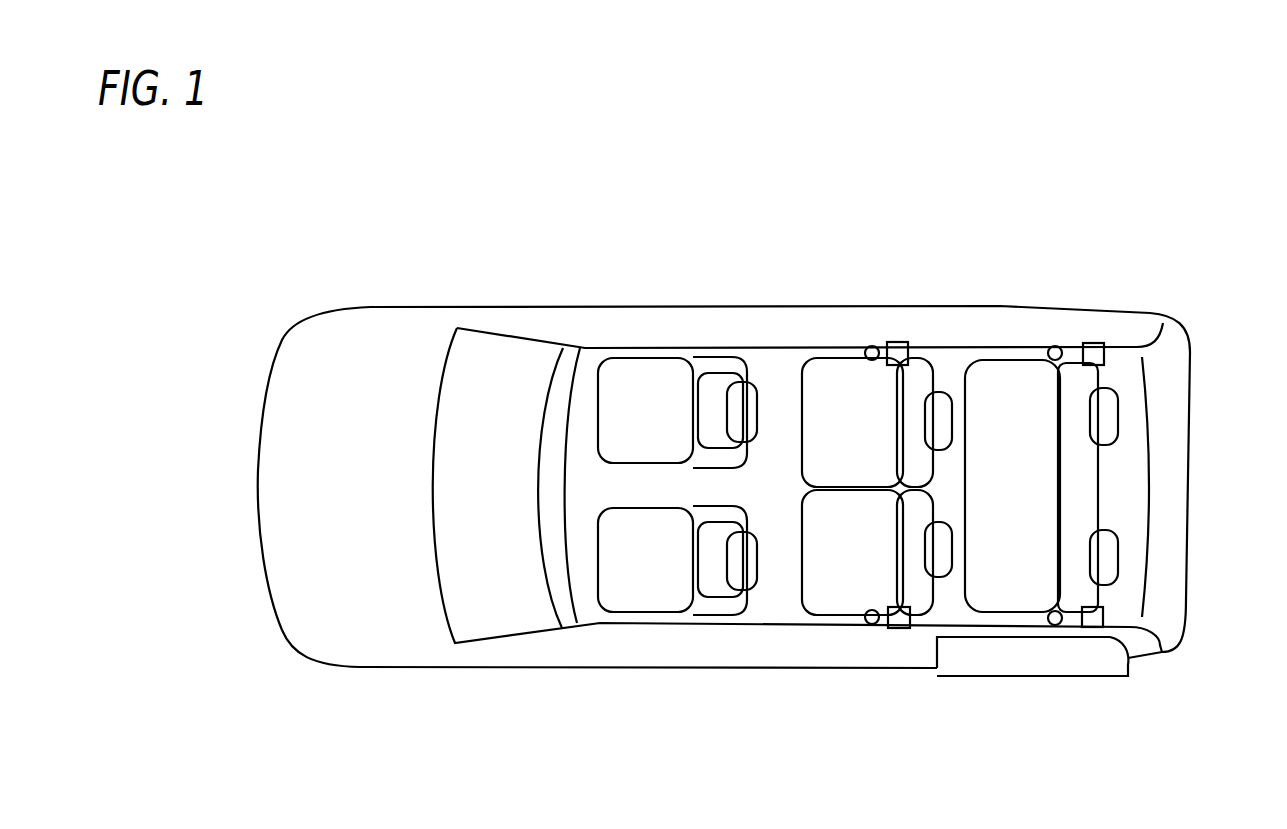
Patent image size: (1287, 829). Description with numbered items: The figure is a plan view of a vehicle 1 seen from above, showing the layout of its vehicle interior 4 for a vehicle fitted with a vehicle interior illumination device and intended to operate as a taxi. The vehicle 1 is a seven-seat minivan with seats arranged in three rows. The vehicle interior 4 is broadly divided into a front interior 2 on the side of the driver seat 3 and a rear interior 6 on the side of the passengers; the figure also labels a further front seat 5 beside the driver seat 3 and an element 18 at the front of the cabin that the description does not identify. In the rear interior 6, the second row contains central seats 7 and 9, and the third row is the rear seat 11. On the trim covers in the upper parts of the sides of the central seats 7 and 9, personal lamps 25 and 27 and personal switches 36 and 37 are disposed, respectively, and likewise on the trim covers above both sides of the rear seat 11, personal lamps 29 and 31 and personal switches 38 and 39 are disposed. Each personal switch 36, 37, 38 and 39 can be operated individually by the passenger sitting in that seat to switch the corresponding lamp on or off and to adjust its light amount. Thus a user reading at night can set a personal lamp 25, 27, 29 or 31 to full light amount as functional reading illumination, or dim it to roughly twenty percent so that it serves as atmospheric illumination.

The vehicle 1 is at (388, 322).
The front interior 2 is at (590, 461).
The driver seat 3 is at (645, 373).
The vehicle interior 4 is at (757, 491).
The front passenger seat 5 is at (653, 597).
The rear interior 6 is at (778, 575).
The central seat 7 is at (825, 590).
The central seat 9 is at (818, 393).
The rear seat 11 is at (1078, 470).
The instrument panel 18 is at (562, 583).
The personal lamp 25 is at (873, 624).
The personal lamp 27 is at (877, 346).
The personal lamp 29 is at (1058, 625).
The personal lamp 31 is at (1051, 346).
The personal switch 36 is at (900, 628).
The personal switch 37 is at (898, 342).
The personal switch 38 is at (1097, 622).
The personal switch 39 is at (1095, 352).